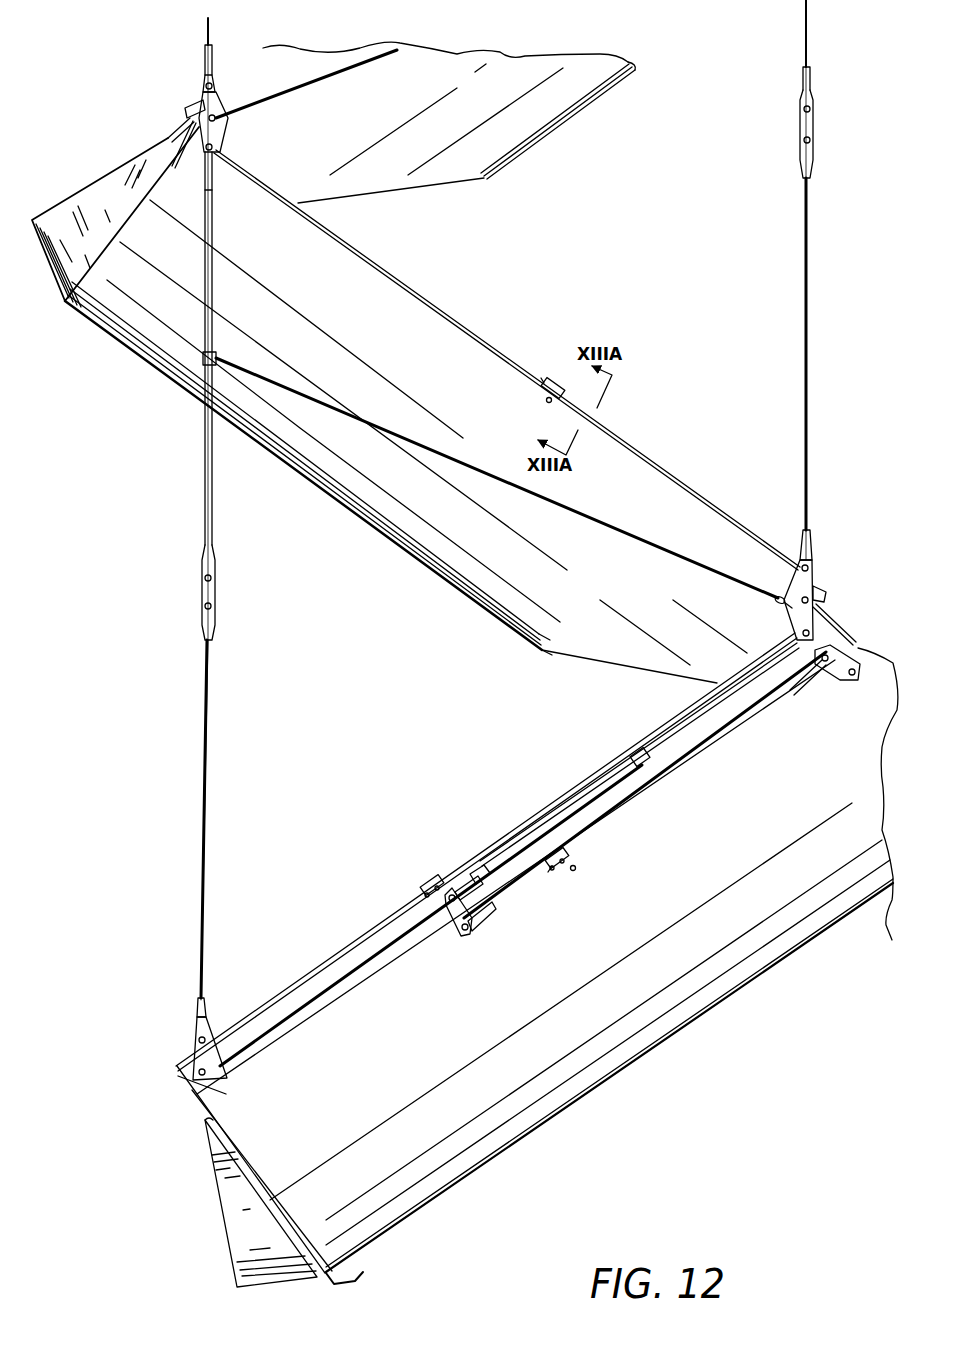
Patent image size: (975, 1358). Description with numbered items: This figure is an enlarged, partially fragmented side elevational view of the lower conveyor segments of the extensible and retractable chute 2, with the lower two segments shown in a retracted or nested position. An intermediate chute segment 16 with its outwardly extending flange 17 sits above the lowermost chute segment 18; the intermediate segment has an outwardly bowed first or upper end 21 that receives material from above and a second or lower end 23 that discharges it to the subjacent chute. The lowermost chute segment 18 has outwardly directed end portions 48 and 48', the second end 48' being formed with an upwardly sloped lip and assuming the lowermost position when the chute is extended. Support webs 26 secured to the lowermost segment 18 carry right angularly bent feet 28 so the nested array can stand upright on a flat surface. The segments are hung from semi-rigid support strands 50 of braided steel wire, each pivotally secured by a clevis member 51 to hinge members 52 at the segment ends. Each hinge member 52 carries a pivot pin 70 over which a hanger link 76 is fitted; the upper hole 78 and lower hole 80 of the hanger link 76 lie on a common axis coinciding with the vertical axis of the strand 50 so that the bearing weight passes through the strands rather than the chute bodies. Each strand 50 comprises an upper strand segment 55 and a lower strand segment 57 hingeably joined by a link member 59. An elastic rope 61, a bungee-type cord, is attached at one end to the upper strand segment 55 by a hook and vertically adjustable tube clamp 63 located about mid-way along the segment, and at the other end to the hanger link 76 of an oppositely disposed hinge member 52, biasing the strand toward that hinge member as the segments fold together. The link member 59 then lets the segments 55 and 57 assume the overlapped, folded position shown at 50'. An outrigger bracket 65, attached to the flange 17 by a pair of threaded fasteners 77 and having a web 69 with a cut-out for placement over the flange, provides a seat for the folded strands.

The extensible and retractable chute 2 is at (617, 403).
The intermediate chute segment 16 is at (545, 130).
The outwardly extending flange 17 is at (715, 503).
The lowermost chute segment 18 is at (600, 1087).
The first or upper end 21 is at (100, 175).
The second or lower end 23 is at (405, 182).
The support web 26 is at (263, 1175).
The right angularly bent foot 28 is at (360, 1282).
The end portion of lowermost chute segment 48 is at (235, 1202).
The second end portion of lowermost chute segment 48' is at (873, 798).
The semi-rigid support strand 50 is at (478, 500).
The folded support strand 50' is at (645, 785).
The clevis member 51 is at (215, 178).
The hinge member 52 is at (227, 124).
The upper strand segment 55 is at (812, 52).
The lower strand segment 57 is at (212, 28).
The link member 59 is at (802, 128).
The elastic rope 61 is at (477, 468).
The tube clamp 63 is at (206, 366).
The outrigger bracket 65 is at (563, 368).
The web 69 is at (546, 398).
The pivot pin 70 is at (185, 112).
The hanger link 76 is at (230, 100).
The threaded fastener 77 is at (540, 388).
The upper hole 78 is at (205, 86).
The lower hole 80 is at (203, 150).